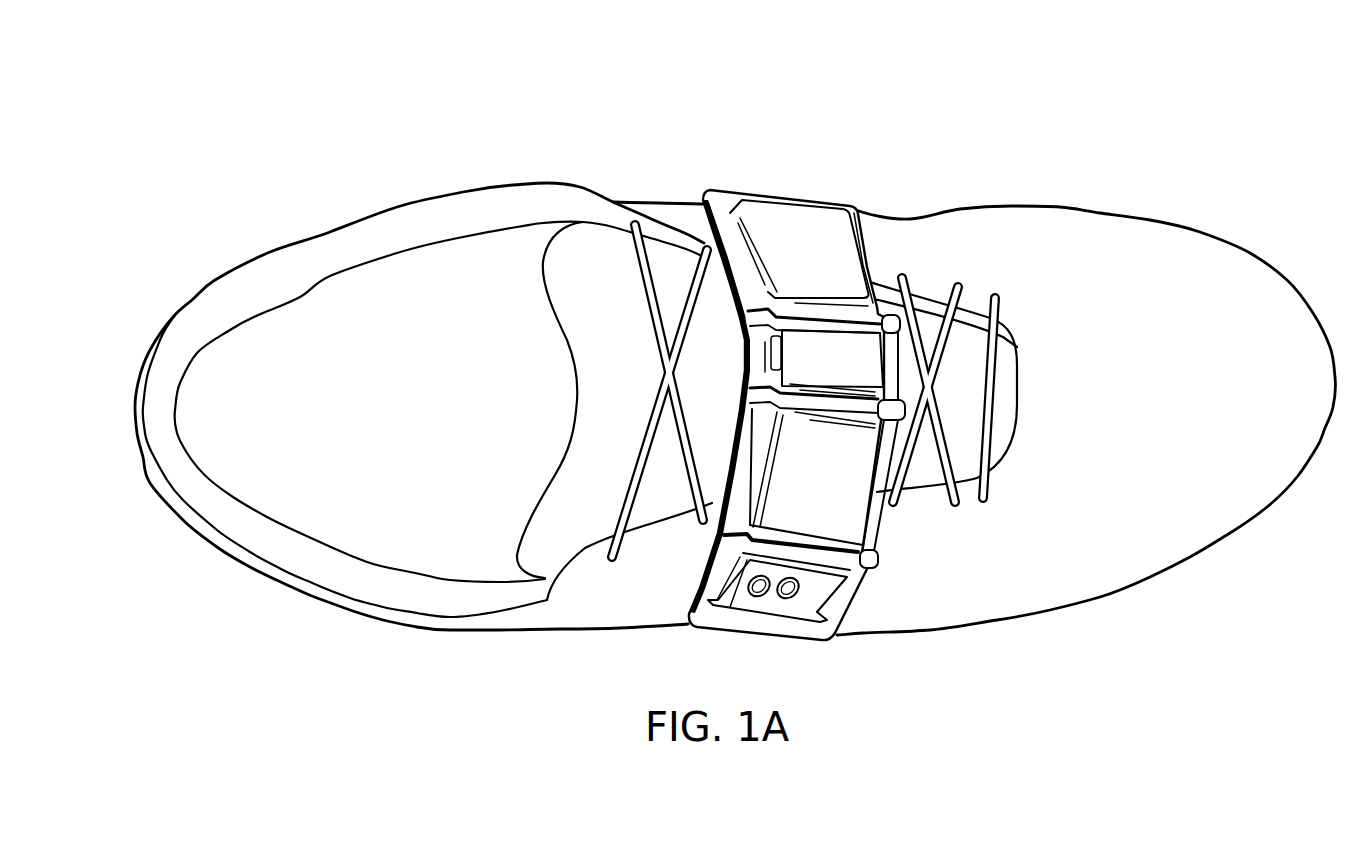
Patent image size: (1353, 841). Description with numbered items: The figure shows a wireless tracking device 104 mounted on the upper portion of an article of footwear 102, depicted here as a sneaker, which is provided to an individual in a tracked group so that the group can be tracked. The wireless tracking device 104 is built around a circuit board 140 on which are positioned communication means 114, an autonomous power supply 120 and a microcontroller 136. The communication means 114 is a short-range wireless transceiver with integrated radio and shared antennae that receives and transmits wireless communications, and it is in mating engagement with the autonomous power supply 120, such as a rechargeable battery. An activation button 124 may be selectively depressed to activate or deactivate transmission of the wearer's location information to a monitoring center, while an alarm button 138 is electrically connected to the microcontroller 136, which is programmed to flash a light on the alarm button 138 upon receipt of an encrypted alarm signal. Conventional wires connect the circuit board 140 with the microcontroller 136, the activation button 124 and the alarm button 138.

The article of footwear 102 is at (1211, 256).
The wireless tracking device 104 is at (829, 358).
The communication means 114 is at (837, 347).
The autonomous power supply 120 is at (817, 242).
The activation button 124 is at (757, 597).
The microcontroller 136 is at (850, 503).
The alarm button 138 is at (795, 600).
The circuit board 140 is at (717, 192).